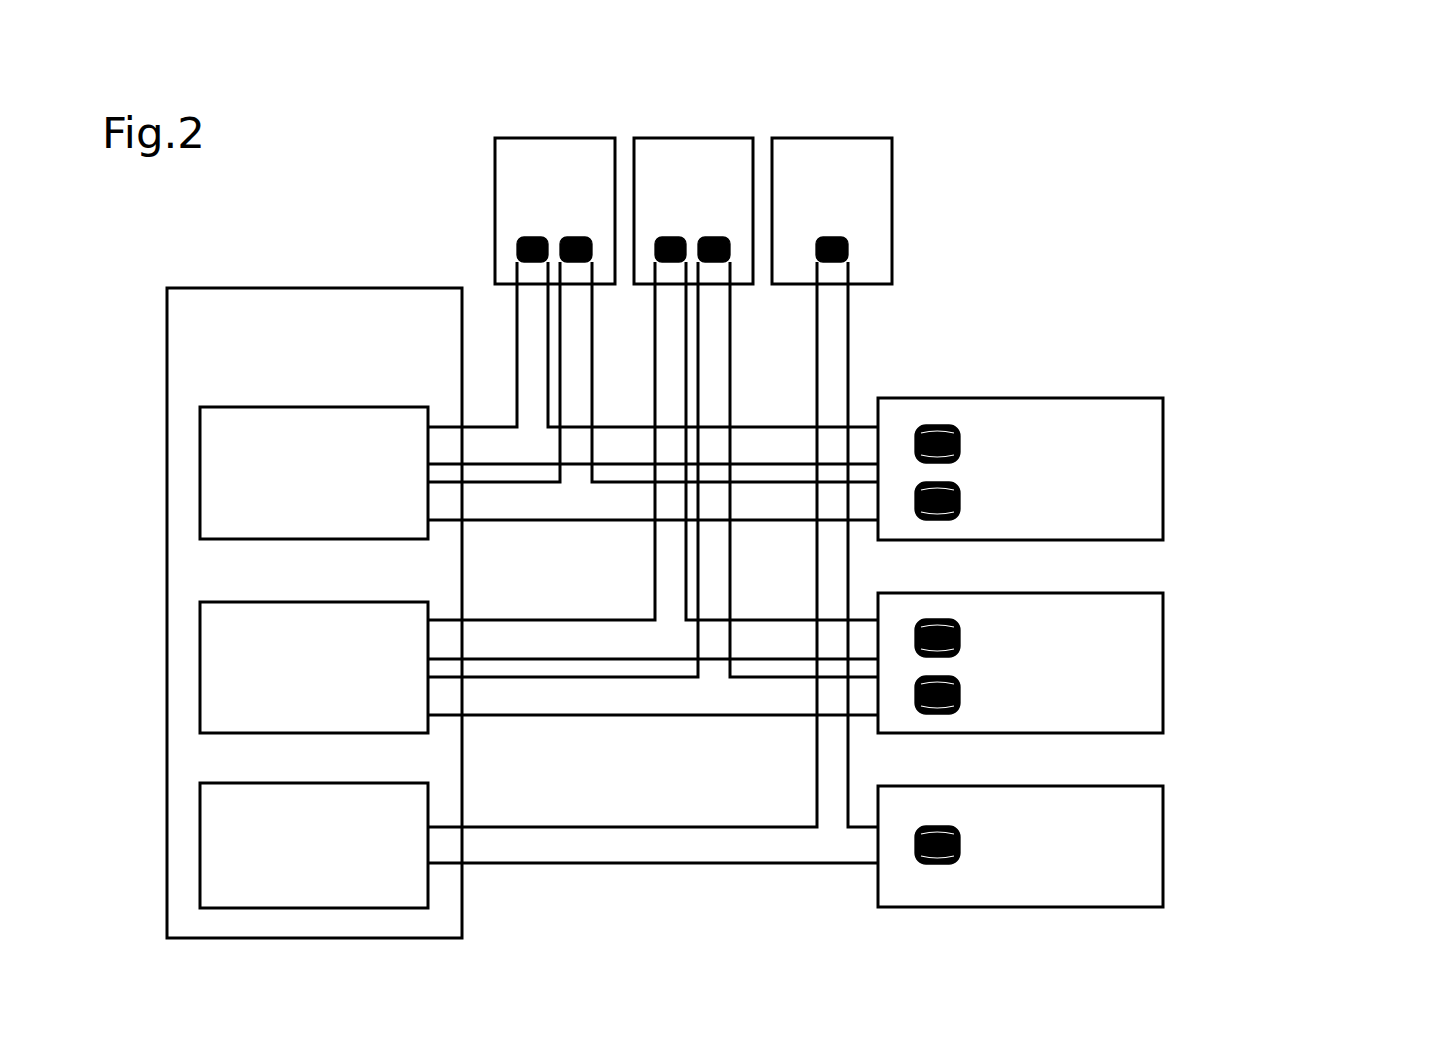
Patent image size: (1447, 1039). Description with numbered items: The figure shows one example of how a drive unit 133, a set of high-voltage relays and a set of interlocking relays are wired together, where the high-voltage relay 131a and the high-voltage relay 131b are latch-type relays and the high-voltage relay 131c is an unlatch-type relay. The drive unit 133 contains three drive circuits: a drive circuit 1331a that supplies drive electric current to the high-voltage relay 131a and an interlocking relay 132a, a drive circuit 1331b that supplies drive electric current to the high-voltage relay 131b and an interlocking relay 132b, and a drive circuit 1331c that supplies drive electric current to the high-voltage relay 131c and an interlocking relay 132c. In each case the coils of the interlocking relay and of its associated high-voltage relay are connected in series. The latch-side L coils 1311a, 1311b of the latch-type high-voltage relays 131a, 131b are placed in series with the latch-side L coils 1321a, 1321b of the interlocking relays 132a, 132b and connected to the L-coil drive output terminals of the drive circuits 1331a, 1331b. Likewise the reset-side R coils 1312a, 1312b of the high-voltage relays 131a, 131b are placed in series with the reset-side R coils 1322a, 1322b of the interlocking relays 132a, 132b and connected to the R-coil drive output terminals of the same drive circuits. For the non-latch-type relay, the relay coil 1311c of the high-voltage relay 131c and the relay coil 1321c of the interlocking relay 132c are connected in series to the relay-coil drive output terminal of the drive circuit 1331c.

The drive unit 133 is at (255, 288).
The drive circuit 1331a is at (293, 407).
The drive circuit 1331b is at (293, 602).
The drive circuit 1331c is at (293, 783).
The interlocking relay 132a is at (512, 138).
The interlocking relay 132b is at (737, 138).
The interlocking relay 132c is at (892, 162).
The L coil 1321a is at (525, 240).
The R coil 1322a is at (573, 240).
The L coil 1321b is at (662, 240).
The R coil 1322b is at (710, 240).
The relay coil 1321c is at (846, 242).
The high-voltage relay 131a is at (1030, 398).
The high-voltage relay 131b is at (1030, 593).
The high-voltage relay 131c is at (1025, 786).
The L coil 1311a is at (960, 447).
The R coil 1312a is at (960, 504).
The L coil 1311b is at (960, 640).
The R coil 1312b is at (960, 697).
The relay coil 1311c is at (960, 846).